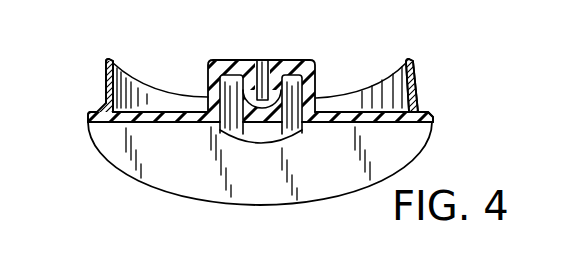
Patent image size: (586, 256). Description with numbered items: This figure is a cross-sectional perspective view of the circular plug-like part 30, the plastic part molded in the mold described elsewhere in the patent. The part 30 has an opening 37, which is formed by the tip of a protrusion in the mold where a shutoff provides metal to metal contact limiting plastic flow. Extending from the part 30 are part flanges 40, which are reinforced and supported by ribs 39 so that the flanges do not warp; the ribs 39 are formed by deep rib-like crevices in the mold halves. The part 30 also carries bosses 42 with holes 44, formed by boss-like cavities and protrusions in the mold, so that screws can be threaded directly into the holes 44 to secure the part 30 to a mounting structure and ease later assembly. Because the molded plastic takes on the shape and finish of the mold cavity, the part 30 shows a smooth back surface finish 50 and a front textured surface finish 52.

The circular plug-like part 30 is at (450, 105).
The opening 37 is at (266, 107).
The ribs 39 is at (107, 81).
The part flanges 40 is at (105, 128).
The bosses 42 is at (253, 66).
The holes 44 is at (263, 66).
The smooth back surface finish 50 is at (163, 93).
The front textured surface finish 52 is at (164, 184).